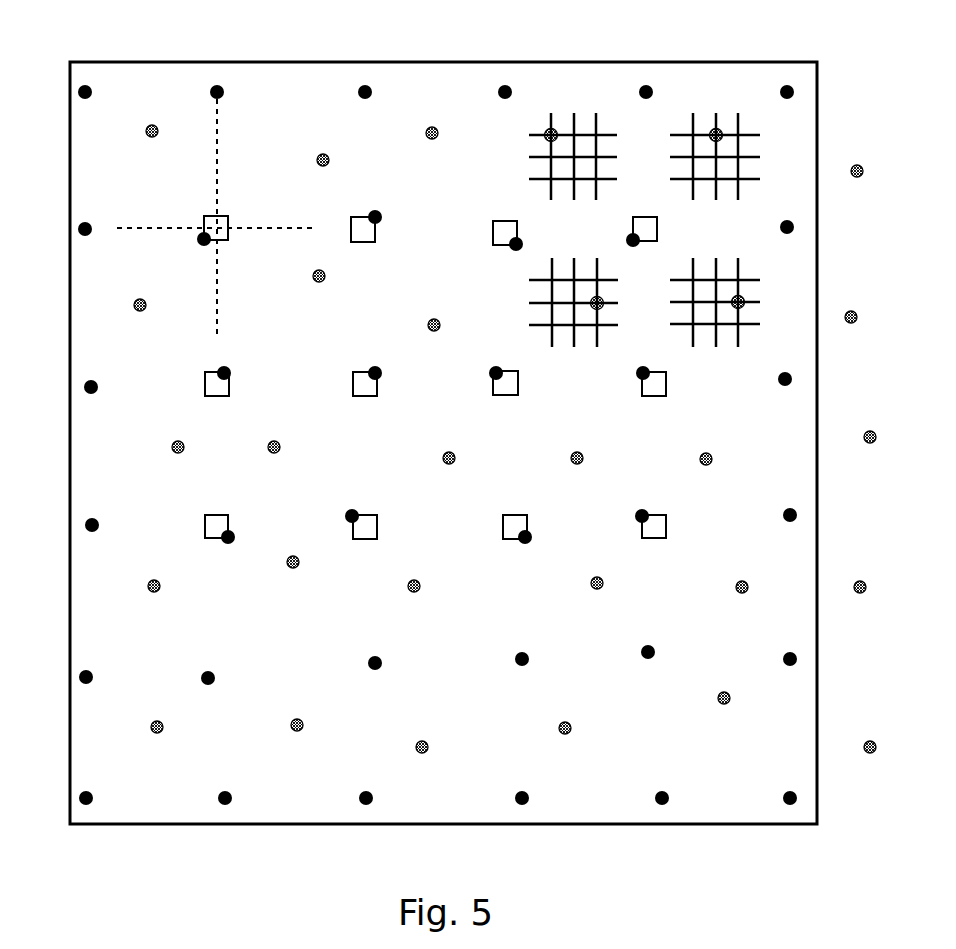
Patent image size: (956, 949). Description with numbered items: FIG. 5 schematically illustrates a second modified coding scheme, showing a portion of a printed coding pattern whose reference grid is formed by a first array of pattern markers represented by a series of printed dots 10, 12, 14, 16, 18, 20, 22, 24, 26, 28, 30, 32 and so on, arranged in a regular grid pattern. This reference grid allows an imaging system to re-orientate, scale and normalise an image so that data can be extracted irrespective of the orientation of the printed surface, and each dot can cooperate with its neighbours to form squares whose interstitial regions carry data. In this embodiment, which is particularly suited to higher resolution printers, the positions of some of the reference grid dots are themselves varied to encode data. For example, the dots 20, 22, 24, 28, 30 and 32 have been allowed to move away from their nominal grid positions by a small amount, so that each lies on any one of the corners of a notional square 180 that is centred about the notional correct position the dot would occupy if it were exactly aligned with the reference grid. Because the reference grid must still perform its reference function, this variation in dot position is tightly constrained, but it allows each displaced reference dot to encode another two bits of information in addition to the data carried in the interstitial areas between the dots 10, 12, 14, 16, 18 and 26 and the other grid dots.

The printed dot 10 is at (87, 87).
The printed dot 12 is at (219, 87).
The printed dot 14 is at (367, 87).
The printed dot 16 is at (507, 87).
The printed dot 18 is at (83, 234).
The printed dot 20 is at (203, 245).
The notional square 180 is at (229, 221).
The printed dot 22 is at (380, 216).
The printed dot 24 is at (515, 251).
The printed dot 26 is at (96, 384).
The printed dot 28 is at (230, 371).
The printed dot 30 is at (381, 372).
The printed dot 32 is at (493, 377).